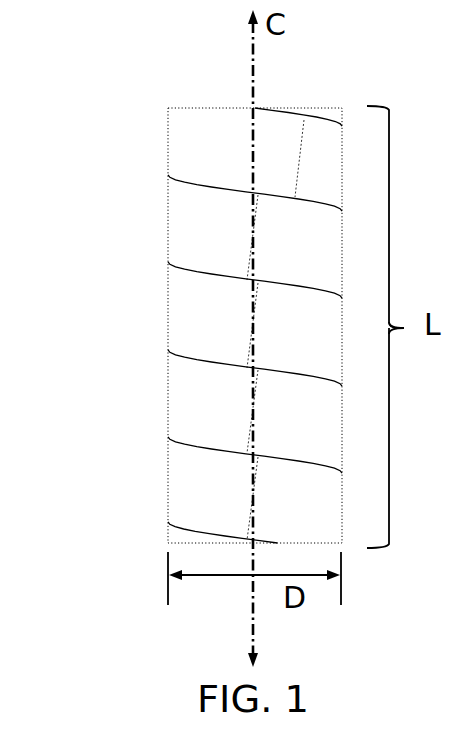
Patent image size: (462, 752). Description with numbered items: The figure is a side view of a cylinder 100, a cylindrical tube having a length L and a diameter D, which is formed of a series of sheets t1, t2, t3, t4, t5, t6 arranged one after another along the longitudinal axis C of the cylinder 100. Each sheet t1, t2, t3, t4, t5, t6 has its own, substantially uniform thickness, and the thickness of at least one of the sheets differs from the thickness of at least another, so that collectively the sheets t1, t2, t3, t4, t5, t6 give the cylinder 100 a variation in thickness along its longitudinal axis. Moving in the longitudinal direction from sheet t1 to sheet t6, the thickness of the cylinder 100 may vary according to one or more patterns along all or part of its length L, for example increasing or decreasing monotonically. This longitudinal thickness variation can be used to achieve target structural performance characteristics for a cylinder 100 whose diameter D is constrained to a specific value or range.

The cylinder 100 is at (127, 89).
The sheet t1 is at (231, 167).
The sheet t2 is at (328, 191).
The sheet t3 is at (304, 252).
The sheet t4 is at (301, 339).
The sheet t5 is at (301, 431).
The sheet t6 is at (302, 517).